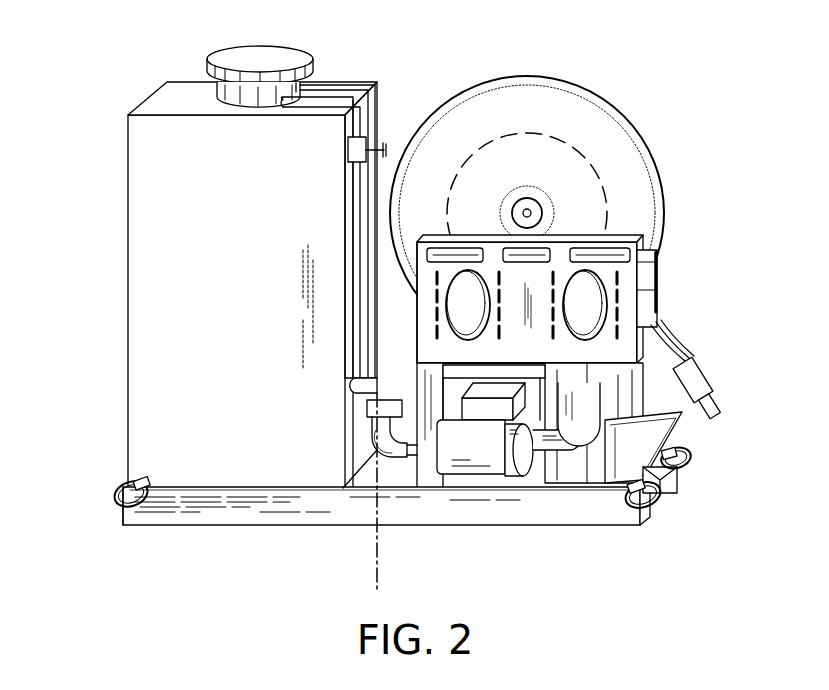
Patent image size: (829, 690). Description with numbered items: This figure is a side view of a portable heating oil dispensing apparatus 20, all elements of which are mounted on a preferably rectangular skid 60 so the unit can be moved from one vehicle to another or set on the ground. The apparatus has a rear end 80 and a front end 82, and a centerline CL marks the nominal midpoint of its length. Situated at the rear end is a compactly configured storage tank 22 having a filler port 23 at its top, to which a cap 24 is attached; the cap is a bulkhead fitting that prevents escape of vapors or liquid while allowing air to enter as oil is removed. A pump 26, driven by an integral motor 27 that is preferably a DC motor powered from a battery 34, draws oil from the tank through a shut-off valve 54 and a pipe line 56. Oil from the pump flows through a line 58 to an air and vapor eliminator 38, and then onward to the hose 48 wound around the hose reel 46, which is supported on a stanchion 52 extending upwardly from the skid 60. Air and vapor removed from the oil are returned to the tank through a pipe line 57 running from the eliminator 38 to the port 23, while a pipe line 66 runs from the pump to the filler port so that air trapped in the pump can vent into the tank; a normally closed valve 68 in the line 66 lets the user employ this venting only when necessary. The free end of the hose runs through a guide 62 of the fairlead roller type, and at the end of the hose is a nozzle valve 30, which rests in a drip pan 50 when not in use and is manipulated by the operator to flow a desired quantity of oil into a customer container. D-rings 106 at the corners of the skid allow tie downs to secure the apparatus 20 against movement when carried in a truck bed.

The apparatus 20 is at (563, 28).
The storage tank 22 is at (140, 282).
The filler port 23 is at (222, 88).
The cap 24 is at (264, 57).
The pump 26 is at (515, 445).
The motor 27 is at (470, 455).
The nozzle valve 30 is at (705, 380).
The battery 34 is at (540, 385).
The air and vapor eliminator 38 is at (578, 455).
The hose reel 46 is at (668, 180).
The hose 48 is at (670, 333).
The drip pan 50 is at (655, 436).
The stanchion 52 is at (423, 345).
The shut-off valve 54 is at (375, 412).
The pipe line 56 is at (403, 460).
The pipe line 57 is at (380, 112).
The line 58 is at (555, 440).
The skid 60 is at (206, 508).
The guide 62 is at (651, 292).
The pipe line 66 is at (352, 210).
The valve 68 is at (347, 150).
The rear end 80 is at (123, 513).
The front end 82 is at (678, 488).
The D-rings 106 is at (112, 498).